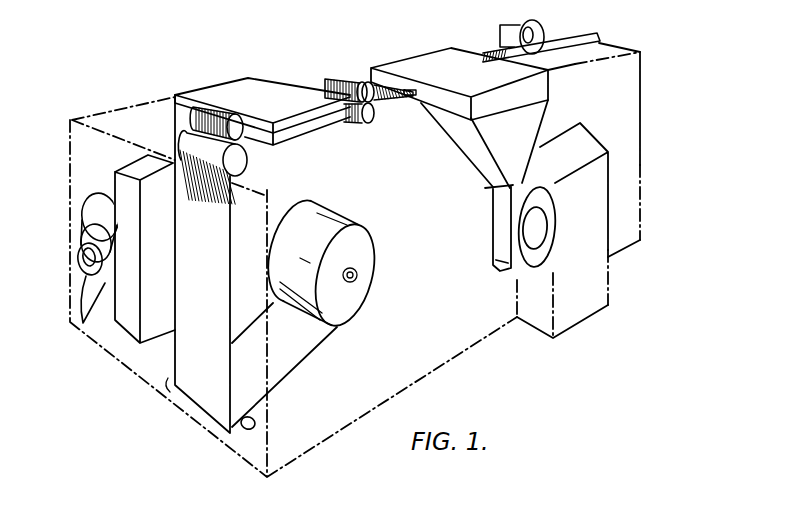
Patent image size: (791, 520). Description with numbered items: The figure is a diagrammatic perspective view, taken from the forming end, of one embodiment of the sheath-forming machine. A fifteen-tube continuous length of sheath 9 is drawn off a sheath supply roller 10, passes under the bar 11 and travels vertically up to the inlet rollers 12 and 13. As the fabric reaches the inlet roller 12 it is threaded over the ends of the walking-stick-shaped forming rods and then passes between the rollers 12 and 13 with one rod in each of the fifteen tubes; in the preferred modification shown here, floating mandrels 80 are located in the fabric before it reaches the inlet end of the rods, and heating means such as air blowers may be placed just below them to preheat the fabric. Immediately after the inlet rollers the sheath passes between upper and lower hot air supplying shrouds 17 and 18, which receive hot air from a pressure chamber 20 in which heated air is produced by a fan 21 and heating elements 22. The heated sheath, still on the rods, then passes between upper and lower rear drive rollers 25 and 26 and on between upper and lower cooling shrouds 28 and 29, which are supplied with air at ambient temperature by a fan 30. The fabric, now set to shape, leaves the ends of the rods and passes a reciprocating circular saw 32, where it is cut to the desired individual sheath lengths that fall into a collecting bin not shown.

The sheath 9 is at (302, 362).
The sheath supply roller 10 is at (356, 275).
The bar 11 is at (268, 428).
The inlet roller 12 is at (183, 147).
The inlet roller 13 is at (189, 85).
The upper hot air supplying shroud 17 is at (294, 100).
The lower hot air supplying shroud 18 is at (230, 158).
The pressure chamber 20 is at (82, 107).
The fan 21 is at (84, 200).
The heating elements 22 is at (83, 325).
The upper rear drive roller 25 is at (341, 82).
The lower rear drive roller 26 is at (362, 118).
The upper cooling shroud 28 is at (386, 75).
The lower cooling shroud 29 is at (408, 100).
The fan 30 is at (550, 236).
The reciprocating circular saw 32 is at (500, 25).
The floating mandrels 80 is at (223, 187).